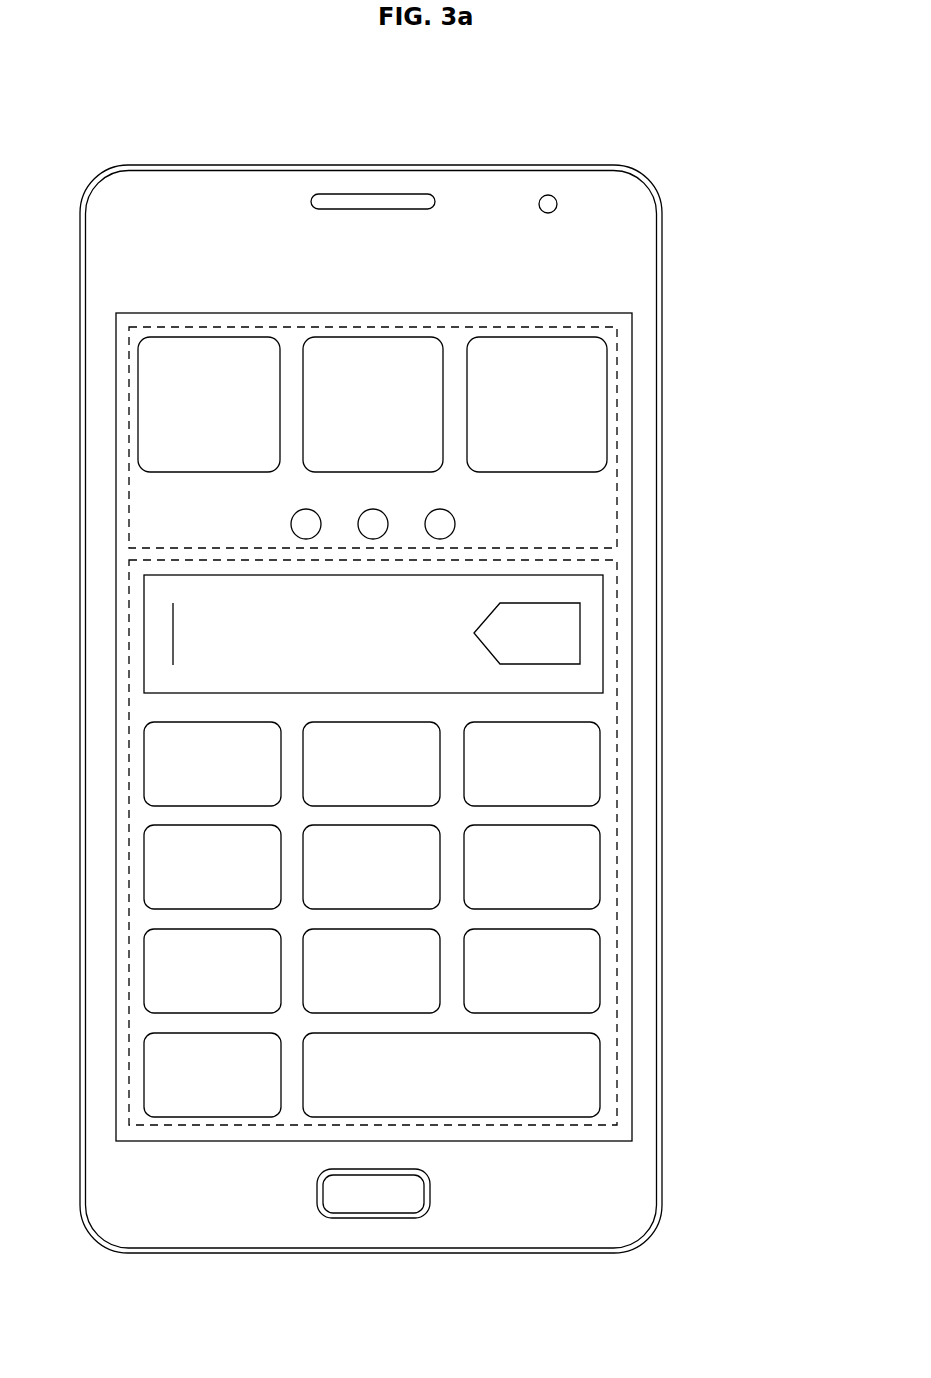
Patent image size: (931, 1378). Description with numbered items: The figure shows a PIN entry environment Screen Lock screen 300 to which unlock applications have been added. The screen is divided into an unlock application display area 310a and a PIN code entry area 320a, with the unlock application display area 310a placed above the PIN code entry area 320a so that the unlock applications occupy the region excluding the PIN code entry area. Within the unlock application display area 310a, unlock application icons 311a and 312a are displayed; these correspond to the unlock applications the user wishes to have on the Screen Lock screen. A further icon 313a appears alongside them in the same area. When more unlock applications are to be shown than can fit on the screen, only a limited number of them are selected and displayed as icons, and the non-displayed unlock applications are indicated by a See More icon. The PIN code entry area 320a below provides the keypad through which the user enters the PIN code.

The PIN entry environment Screen Lock screen 300 is at (262, 118).
The unlock application display area 310a is at (617, 424).
The unlock application icon 311a is at (207, 338).
The unlock application icon 312a is at (371, 338).
The other device selection button 313a is at (537, 338).
The PIN code entry area 320a is at (617, 838).